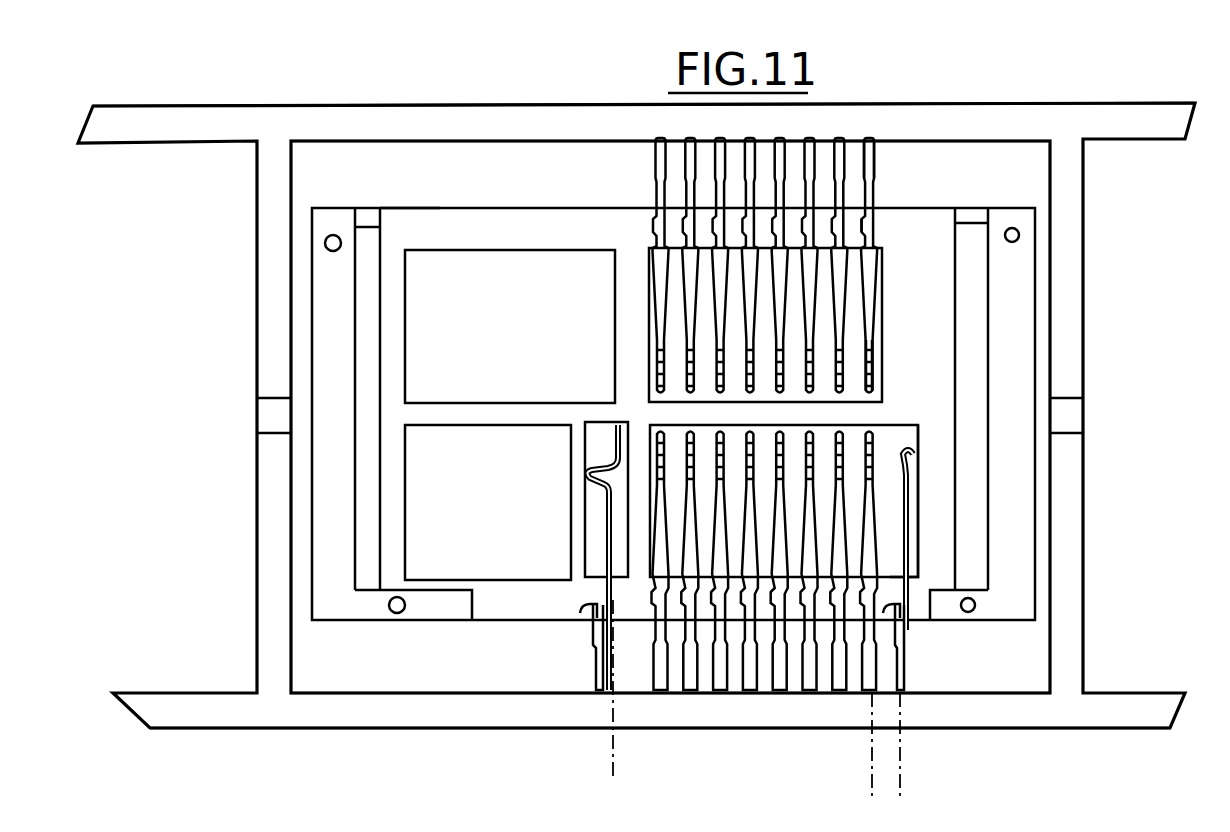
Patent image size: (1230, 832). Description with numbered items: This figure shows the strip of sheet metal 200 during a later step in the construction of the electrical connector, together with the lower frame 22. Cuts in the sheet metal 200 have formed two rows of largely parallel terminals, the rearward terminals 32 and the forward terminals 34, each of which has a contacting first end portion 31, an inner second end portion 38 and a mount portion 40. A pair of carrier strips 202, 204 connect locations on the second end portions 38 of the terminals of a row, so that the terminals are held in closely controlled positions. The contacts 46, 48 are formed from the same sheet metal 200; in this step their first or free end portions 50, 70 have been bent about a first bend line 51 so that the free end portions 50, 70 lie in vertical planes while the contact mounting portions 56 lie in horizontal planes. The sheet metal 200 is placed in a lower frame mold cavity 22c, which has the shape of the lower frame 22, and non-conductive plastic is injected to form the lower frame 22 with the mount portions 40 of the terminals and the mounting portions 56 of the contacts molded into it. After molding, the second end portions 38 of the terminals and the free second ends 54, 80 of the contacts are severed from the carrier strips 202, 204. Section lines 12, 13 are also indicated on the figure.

The sheet metal 200 is at (408, 100).
The carrier strip 204 is at (302, 106).
The carrier strip 202 is at (371, 730).
The lower frame 22 is at (461, 213).
The lower frame mold cavity 22c is at (440, 222).
The forward terminal 34 is at (890, 282).
The contacting first end portion 31 is at (873, 330).
The inner second end portion 38 is at (874, 162).
The mount portion 40 is at (876, 226).
The rearward terminal 32 is at (884, 442).
The contact 46 is at (602, 555).
The contact first or free end portion 50 is at (606, 522).
The contact mounting portion 56 is at (582, 606).
The free second end 54 is at (597, 668).
The first bend line 51 is at (612, 740).
The contact 48 is at (923, 553).
The contact first or free end portion 70 is at (910, 532).
The free second end 80 is at (903, 678).
The section line 12 is at (868, 747).
The section line 13 is at (900, 747).